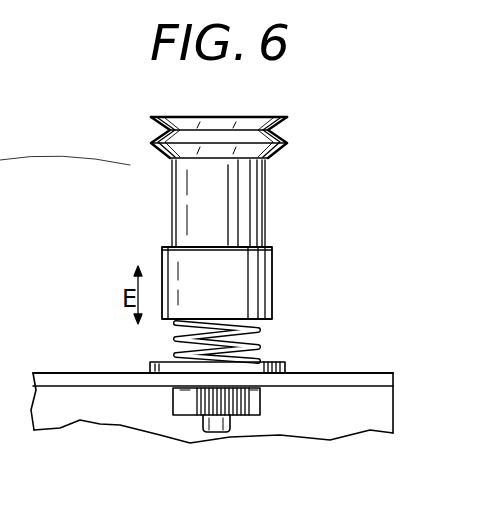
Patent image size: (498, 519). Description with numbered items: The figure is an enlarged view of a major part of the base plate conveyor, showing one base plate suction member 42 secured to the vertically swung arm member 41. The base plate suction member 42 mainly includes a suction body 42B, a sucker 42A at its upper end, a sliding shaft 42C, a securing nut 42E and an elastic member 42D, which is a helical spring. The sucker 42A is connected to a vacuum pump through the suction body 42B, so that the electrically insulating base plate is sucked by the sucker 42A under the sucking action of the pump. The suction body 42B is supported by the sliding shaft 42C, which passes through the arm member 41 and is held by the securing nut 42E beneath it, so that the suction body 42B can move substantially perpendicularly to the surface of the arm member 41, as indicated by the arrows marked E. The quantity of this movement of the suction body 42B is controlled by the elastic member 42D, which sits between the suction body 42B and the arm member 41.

The vertically swung arm member 41 is at (358, 373).
The base plate suction member 42 is at (224, 200).
The sucker 42A is at (243, 117).
The suction body 42B is at (173, 195).
The sliding shaft 42C is at (214, 433).
The elastic member 42D is at (266, 352).
The securing nut 42E is at (262, 407).